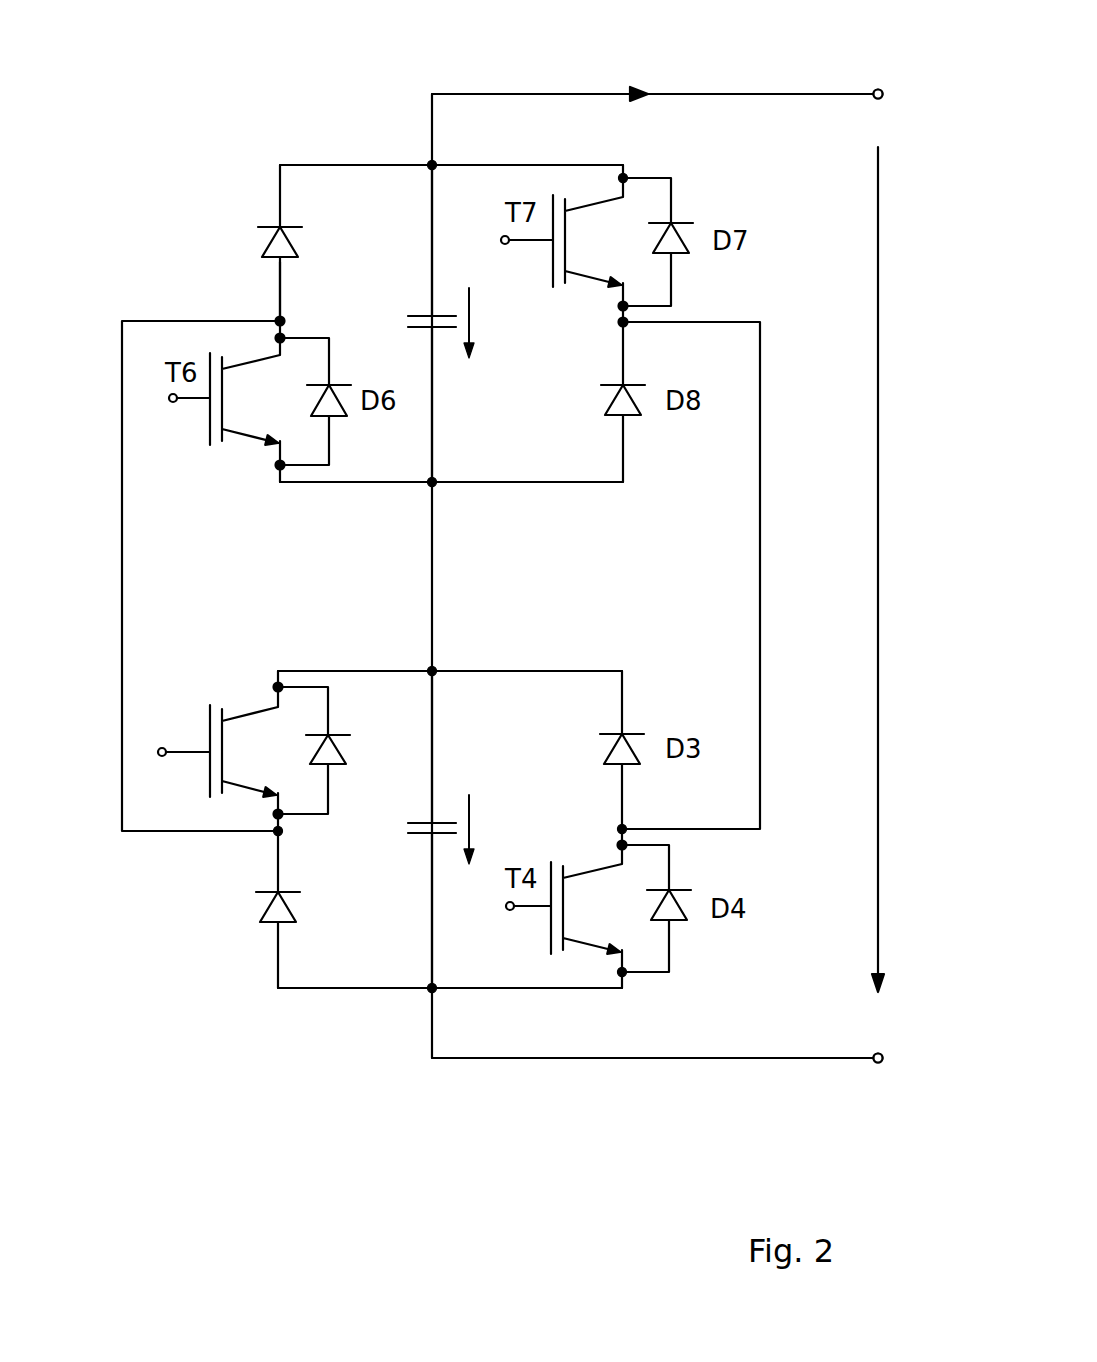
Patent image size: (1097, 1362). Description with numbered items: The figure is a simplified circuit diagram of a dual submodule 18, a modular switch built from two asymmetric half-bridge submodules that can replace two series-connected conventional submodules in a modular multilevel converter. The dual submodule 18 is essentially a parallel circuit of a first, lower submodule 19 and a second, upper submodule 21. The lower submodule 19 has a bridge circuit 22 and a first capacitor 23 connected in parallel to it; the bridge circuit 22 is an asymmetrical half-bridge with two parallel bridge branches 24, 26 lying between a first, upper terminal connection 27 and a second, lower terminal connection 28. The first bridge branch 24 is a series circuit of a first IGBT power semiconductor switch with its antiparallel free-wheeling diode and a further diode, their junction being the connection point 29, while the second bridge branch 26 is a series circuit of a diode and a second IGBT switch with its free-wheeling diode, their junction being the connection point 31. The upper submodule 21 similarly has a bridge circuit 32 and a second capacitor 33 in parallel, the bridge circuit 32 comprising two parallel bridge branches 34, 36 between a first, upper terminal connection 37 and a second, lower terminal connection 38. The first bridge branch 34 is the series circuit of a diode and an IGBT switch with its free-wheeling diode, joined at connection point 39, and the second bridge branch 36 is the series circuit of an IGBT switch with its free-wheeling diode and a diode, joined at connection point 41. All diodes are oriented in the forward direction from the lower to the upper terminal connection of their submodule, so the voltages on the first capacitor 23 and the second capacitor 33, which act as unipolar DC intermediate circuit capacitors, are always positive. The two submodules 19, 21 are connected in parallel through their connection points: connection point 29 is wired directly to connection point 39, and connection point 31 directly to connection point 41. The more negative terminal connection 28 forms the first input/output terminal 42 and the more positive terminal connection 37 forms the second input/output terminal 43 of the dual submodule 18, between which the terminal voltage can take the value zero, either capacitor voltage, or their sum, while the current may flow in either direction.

The dual submodule 18 is at (142, 142).
The first submodule 19 is at (238, 1088).
The second submodule 21 is at (310, 140).
The bridge circuit 22 is at (212, 970).
The capacitor C1 23 is at (400, 893).
The first bridge branch 24 is at (272, 970).
The second bridge branch 26 is at (622, 990).
The first terminal connection 27 is at (433, 669).
The second terminal connection 28 is at (432, 992).
The connection point 29 is at (278, 834).
The connection point 31 is at (625, 830).
The bridge circuit 32 is at (256, 186).
The capacitor C2 33 is at (405, 285).
The first bridge branch 34 is at (280, 288).
The second bridge branch 36 is at (624, 180).
The first terminal connection 37 is at (430, 162).
The second terminal connection 38 is at (433, 486).
The connection point 39 is at (278, 321).
The connection point 41 is at (625, 322).
The first input/output terminal 42 is at (880, 1063).
The second input/output terminal 43 is at (883, 90).